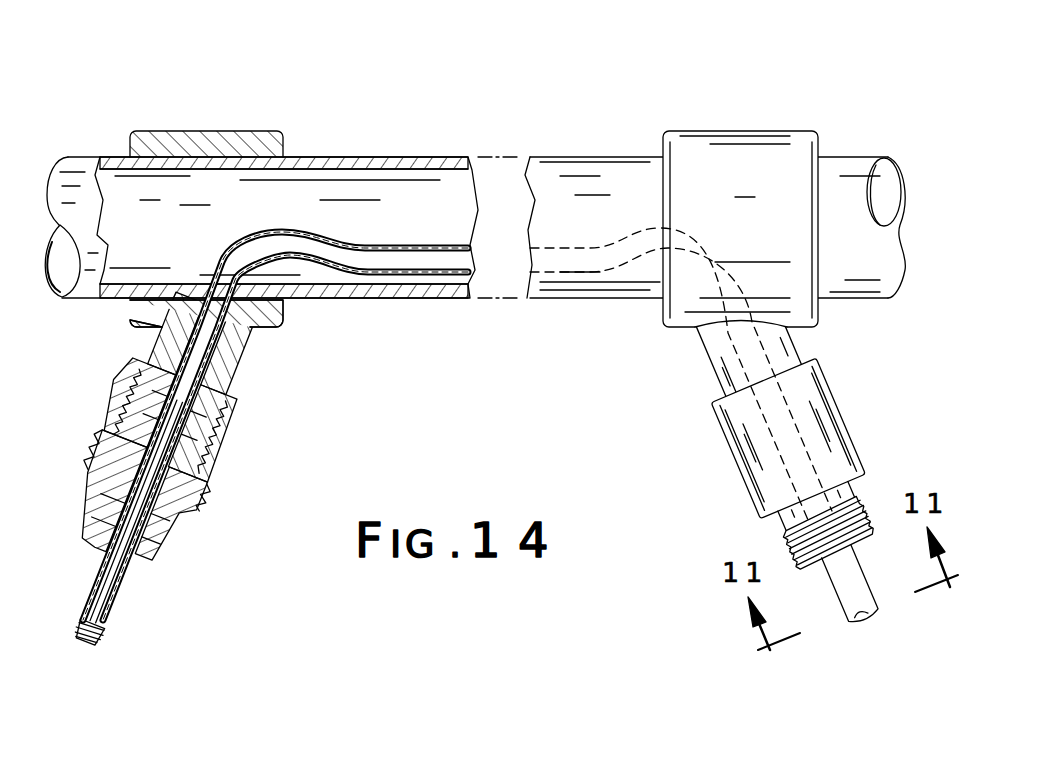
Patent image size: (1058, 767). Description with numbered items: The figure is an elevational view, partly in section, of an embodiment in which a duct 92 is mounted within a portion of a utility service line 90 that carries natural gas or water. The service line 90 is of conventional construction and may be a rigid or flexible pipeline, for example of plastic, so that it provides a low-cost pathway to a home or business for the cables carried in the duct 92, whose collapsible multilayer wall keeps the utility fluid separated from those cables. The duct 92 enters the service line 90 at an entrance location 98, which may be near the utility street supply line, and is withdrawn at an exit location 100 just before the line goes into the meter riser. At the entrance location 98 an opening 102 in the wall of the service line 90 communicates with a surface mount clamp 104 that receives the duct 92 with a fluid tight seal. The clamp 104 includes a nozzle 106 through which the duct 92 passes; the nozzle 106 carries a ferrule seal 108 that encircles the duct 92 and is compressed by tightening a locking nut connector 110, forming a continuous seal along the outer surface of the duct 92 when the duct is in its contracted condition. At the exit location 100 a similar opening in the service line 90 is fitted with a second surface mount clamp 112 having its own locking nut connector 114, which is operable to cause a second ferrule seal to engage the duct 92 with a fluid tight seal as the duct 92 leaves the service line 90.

The service line 90 is at (396, 158).
The duct 92 is at (122, 571).
The entrance location 98 is at (176, 102).
The exit location 100 is at (766, 90).
The opening 102 is at (208, 270).
The surface mount clamp 104 is at (255, 150).
The nozzle 106 is at (240, 356).
The ferrule seal 108 is at (185, 432).
The locking nut connector 110 is at (188, 492).
The second surface mount clamp 112 is at (728, 146).
The locking nut connector 114 is at (735, 439).